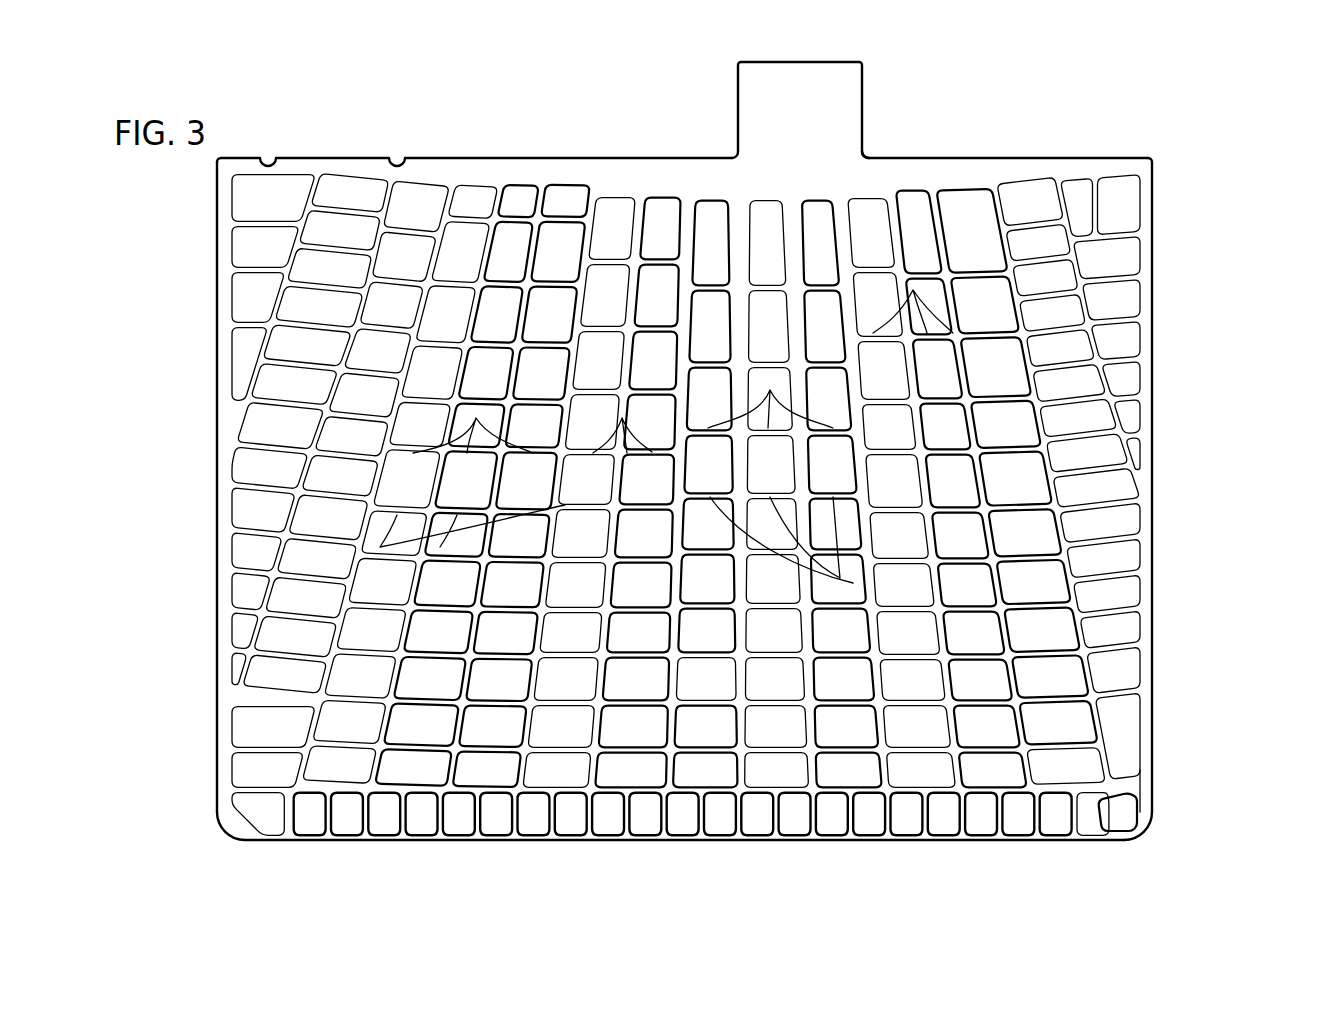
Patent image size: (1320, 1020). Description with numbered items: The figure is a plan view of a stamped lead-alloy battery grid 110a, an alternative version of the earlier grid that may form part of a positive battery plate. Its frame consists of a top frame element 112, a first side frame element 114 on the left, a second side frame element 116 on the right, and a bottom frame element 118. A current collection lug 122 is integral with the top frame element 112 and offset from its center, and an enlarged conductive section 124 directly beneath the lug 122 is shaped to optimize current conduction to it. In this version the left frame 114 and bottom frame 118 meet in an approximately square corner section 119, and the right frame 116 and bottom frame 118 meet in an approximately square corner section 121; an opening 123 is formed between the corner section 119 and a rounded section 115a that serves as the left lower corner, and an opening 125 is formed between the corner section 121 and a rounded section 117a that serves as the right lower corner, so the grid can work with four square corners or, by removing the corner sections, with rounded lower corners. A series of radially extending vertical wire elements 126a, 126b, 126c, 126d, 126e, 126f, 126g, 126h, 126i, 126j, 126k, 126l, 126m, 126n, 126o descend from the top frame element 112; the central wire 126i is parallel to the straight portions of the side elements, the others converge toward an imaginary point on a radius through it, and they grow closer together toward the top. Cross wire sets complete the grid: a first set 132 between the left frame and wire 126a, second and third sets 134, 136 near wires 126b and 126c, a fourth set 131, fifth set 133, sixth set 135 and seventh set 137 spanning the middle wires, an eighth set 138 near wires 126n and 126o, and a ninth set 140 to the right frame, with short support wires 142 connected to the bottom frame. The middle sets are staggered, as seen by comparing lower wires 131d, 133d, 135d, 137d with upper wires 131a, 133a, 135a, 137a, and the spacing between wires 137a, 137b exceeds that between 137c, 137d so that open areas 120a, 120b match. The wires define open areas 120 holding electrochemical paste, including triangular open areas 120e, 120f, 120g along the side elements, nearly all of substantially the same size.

The grid 110a is at (1213, 121).
The top frame element 112 is at (570, 176).
The first side frame element 114 is at (222, 466).
The second side frame element 116 is at (1142, 490).
The bottom frame element 118 is at (421, 842).
The square corner section 119 is at (226, 838).
The square corner section 121 is at (1142, 843).
The current collection lug 122 is at (848, 92).
The enlarged conductive section 124 is at (836, 168).
The opening 123 is at (250, 802).
The opening 125 is at (1122, 826).
The rounded section 115a is at (266, 806).
The rounded section 117a is at (1128, 790).
The open areas 120 is at (330, 480).
The open area 120a is at (913, 732).
The open area 120b is at (893, 488).
The triangular open area 120e is at (240, 355).
The triangular open area 120f is at (240, 655).
The triangular open area 120g is at (1138, 462).
The vertical grid wire element 126a is at (276, 302).
The vertical grid wire element 126b is at (290, 402).
The vertical grid wire element 126c is at (290, 690).
The vertical grid wire element 126d is at (275, 735).
The vertical grid wire element 126e is at (481, 772).
The vertical grid wire element 126f is at (532, 772).
The vertical grid wire element 126g is at (630, 700).
The vertical grid wire element 126h is at (685, 720).
The vertical grid wire element 126i is at (760, 716).
The vertical grid wire element 126j is at (786, 748).
The vertical grid wire element 126k is at (887, 772).
The vertical grid wire element 126l is at (1120, 740).
The vertical grid wire element 126m is at (1095, 665).
The vertical grid wire element 126n is at (1080, 378).
The vertical grid wire element 126o is at (1100, 318).
The fourth set of parallel cross wire elements 131 is at (465, 513).
The cross wire element 131a is at (476, 418).
The cross wire element 131d is at (343, 752).
The first set of cross wire elements 132 is at (272, 206).
The fifth set of parallel cross wire elements 133 is at (610, 562).
The cross wire element 133a is at (622, 418).
The cross wire element 133d is at (575, 760).
The second set of parallel cross wire elements 134 is at (341, 207).
The sixth set of parallel cross wire elements 135 is at (757, 553).
The cross wire element 135a is at (770, 390).
The cross wire element 135d is at (707, 752).
The third set of parallel cross wire elements 136 is at (411, 240).
The seventh set of parallel cross wire elements 137 is at (913, 290).
The horizontal wire element 137a is at (1000, 432).
The horizontal wire element 137b is at (1000, 541).
The horizontal wire element 137c is at (1030, 735).
The horizontal wire element 137d is at (1012, 762).
The eighth set of parallel cross wire elements 138 is at (1026, 215).
The ninth set of parallel cross wire elements 140 is at (1120, 266).
The short support wires 142 is at (410, 755).